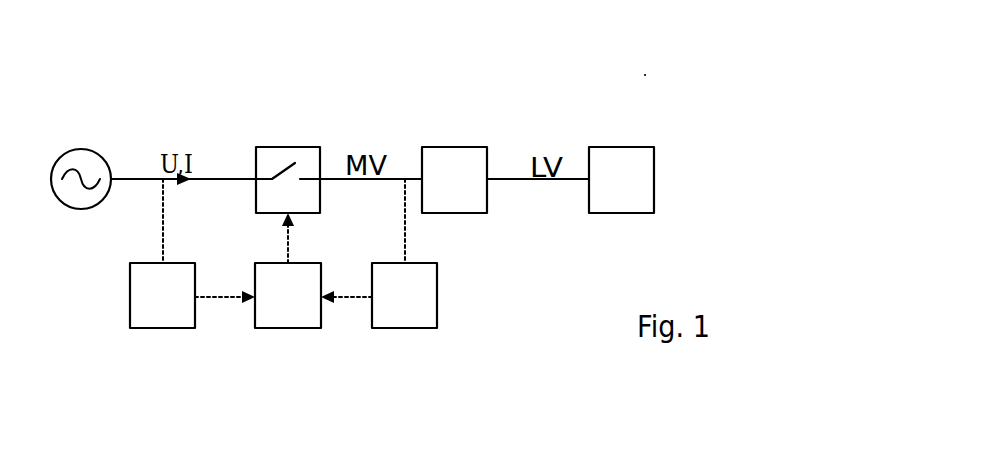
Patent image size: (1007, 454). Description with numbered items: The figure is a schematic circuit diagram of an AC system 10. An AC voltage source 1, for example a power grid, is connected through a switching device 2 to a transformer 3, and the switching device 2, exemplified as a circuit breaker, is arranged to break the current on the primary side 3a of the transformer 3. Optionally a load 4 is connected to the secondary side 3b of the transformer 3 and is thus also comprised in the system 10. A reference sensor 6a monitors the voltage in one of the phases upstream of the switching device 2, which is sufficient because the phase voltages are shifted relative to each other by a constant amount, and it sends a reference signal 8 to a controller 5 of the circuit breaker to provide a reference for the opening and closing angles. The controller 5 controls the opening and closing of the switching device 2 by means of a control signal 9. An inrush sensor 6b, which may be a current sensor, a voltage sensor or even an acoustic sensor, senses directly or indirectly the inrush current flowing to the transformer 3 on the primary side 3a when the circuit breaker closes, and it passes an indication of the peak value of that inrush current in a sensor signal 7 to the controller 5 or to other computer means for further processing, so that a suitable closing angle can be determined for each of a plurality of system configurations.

The AC voltage source 1 is at (100, 164).
The switching device 2 is at (278, 152).
The transformer 3 is at (443, 153).
The primary side 3a is at (406, 136).
The secondary side 3b is at (513, 135).
The load 4 is at (647, 153).
The controller 5 is at (276, 270).
The reference sensor 6a is at (142, 297).
The inrush sensor 6b is at (423, 289).
The sensor signal 7 is at (346, 286).
The reference signal 8 is at (225, 286).
The control signal 9 is at (295, 238).
The AC system 10 is at (634, 72).